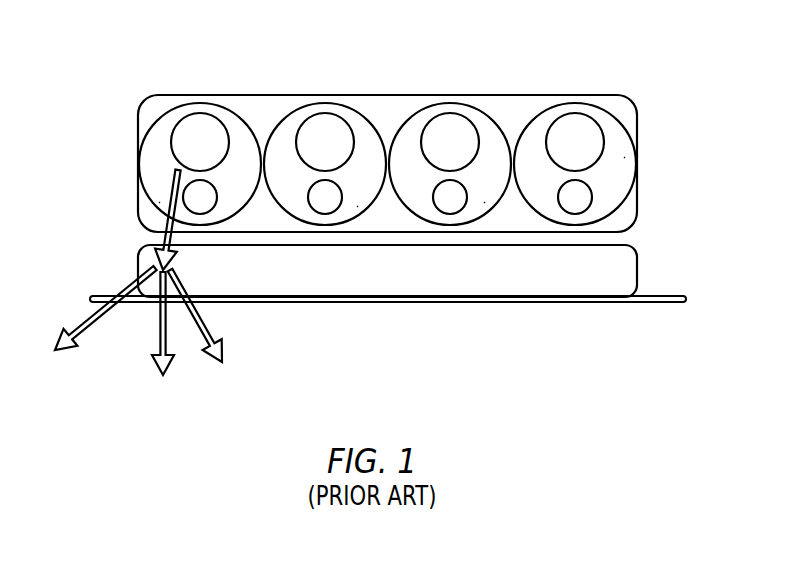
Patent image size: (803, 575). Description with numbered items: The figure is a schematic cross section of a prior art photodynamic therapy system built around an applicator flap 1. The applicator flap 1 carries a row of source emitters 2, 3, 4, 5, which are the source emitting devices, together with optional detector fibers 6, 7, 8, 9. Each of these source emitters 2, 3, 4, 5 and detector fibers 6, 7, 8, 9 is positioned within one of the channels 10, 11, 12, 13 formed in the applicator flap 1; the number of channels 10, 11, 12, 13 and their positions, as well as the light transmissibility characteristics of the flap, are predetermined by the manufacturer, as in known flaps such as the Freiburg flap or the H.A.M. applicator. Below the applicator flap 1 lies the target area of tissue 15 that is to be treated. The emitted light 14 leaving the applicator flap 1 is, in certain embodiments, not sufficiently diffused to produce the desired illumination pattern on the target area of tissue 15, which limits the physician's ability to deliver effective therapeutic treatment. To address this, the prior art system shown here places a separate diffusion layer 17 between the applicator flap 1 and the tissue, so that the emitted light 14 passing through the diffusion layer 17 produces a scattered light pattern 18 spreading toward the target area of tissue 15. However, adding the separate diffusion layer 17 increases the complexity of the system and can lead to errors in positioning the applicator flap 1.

The applicator flap 1 is at (610, 95).
The source emitter 2 is at (199, 118).
The source emitter 3 is at (323, 118).
The source emitter 4 is at (448, 118).
The source emitter 5 is at (572, 118).
The detector fiber 6 is at (205, 213).
The detector fiber 7 is at (322, 213).
The detector fiber 8 is at (457, 213).
The detector fiber 9 is at (575, 213).
The channel 10 is at (153, 143).
The channel 11 is at (358, 207).
The channel 12 is at (485, 203).
The channel 13 is at (625, 158).
The emitted light 14 is at (160, 203).
The target area of tissue 15 is at (655, 302).
The diffusion layer 17 is at (638, 262).
The scattered light pattern 18 is at (98, 392).